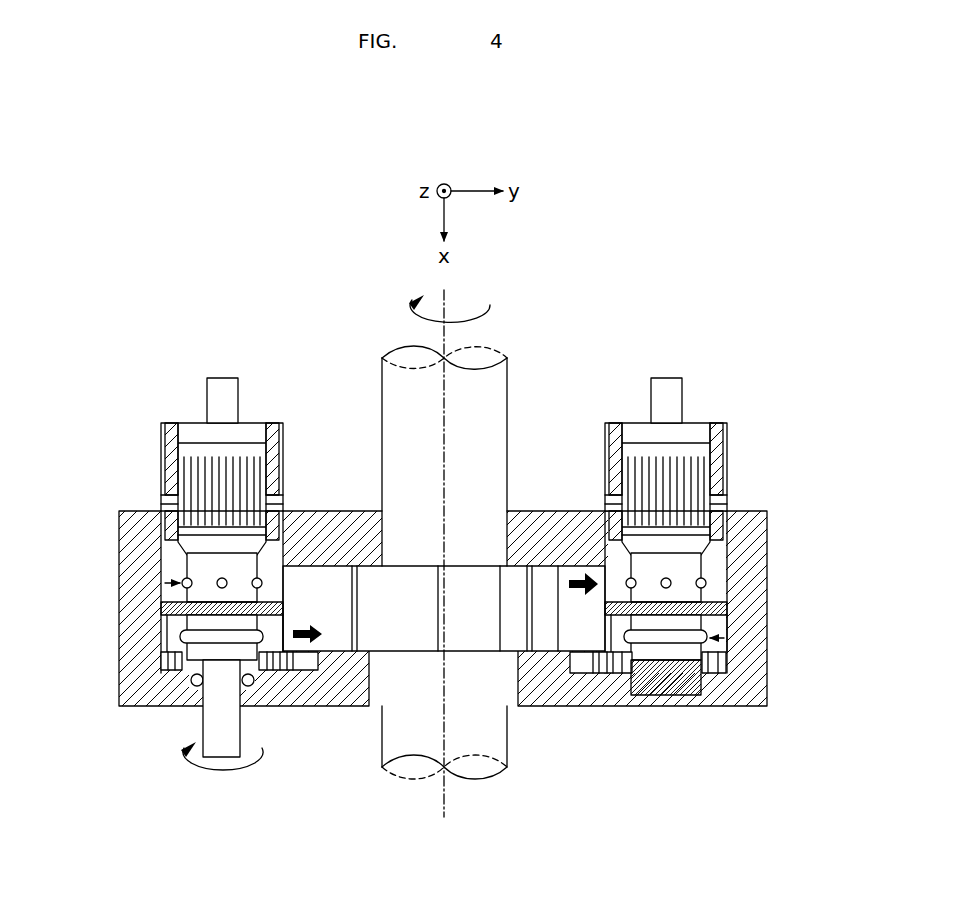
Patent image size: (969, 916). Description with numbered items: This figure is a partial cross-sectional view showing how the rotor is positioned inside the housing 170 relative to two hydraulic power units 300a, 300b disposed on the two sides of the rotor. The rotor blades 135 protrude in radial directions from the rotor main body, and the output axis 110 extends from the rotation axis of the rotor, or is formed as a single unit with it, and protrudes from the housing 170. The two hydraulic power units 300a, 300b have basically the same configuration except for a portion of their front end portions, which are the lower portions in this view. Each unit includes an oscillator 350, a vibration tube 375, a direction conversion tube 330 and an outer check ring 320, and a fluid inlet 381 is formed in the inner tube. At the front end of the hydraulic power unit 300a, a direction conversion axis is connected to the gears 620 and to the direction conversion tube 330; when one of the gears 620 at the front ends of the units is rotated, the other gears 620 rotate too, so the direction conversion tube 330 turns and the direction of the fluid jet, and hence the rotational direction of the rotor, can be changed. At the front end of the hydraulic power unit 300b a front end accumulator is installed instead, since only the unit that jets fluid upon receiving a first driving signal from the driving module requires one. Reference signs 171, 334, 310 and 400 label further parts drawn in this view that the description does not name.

The output axis 110 is at (498, 388).
The rotor blades 135 is at (343, 590).
The housing 170 is at (762, 556).
The sealing ring 171 is at (165, 500).
The hydraulic power unit 300a is at (257, 414).
The hydraulic power unit 300b is at (697, 417).
The fixing block 310 is at (668, 693).
The outer check ring 320 is at (165, 668).
The direction conversion tube 330 is at (162, 632).
The plate 334 is at (167, 605).
The oscillator 350 is at (212, 395).
The vibration tube 375 is at (188, 483).
The fluid inlet 381 is at (221, 582).
The output shaft 400 is at (212, 737).
The gears 620 is at (281, 668).